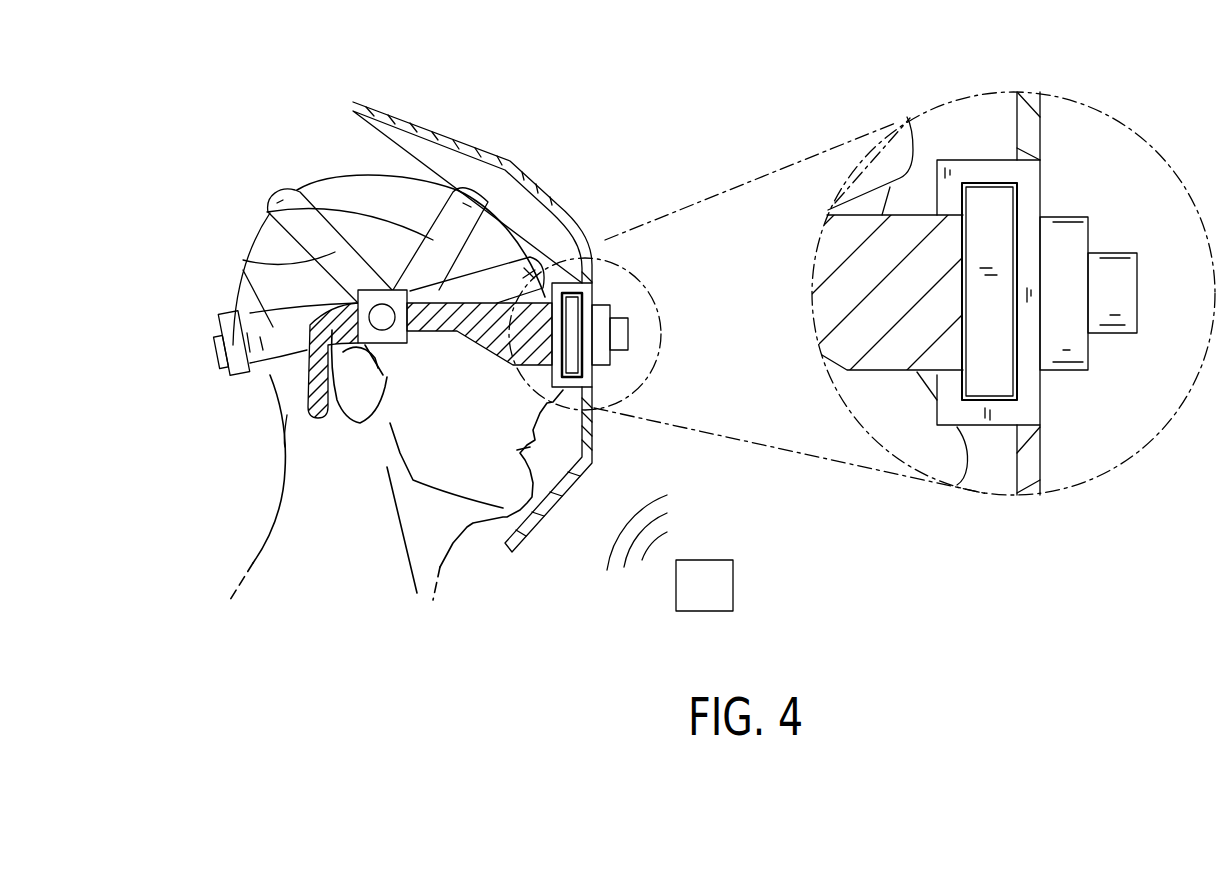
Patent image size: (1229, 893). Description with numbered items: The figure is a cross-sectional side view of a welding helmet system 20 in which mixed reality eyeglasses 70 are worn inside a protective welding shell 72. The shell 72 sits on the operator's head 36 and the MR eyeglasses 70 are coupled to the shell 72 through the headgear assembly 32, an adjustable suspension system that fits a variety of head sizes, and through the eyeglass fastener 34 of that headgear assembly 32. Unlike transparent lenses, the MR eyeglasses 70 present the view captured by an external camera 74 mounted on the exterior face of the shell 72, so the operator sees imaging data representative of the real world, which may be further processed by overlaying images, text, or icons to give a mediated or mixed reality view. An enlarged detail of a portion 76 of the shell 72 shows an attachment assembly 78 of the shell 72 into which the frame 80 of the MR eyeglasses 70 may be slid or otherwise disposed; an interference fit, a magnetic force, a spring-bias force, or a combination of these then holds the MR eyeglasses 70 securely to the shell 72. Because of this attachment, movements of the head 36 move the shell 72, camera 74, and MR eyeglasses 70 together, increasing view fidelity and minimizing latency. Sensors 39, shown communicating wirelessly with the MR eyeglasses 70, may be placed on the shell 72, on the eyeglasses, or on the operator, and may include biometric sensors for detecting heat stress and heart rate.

The helmet system 20 is at (208, 165).
The headgear assembly 32 is at (270, 213).
The eyeglass fastener 34 is at (393, 343).
The head 36 is at (287, 415).
The sensors 39 is at (705, 560).
The MR eyeglasses 70 is at (545, 310).
The protective welding shell 72 is at (415, 128).
The external camera 74 is at (627, 333).
The portion of the shell 76 is at (1100, 110).
The attachment assembly 78 is at (978, 428).
The frame 80 is at (995, 345).